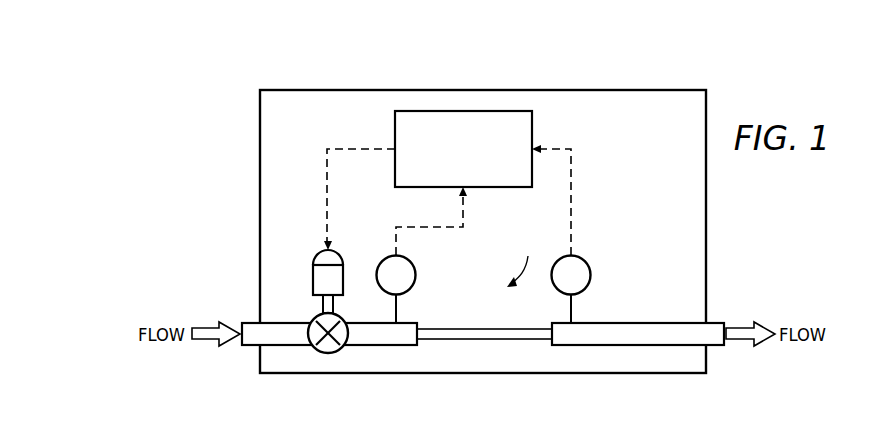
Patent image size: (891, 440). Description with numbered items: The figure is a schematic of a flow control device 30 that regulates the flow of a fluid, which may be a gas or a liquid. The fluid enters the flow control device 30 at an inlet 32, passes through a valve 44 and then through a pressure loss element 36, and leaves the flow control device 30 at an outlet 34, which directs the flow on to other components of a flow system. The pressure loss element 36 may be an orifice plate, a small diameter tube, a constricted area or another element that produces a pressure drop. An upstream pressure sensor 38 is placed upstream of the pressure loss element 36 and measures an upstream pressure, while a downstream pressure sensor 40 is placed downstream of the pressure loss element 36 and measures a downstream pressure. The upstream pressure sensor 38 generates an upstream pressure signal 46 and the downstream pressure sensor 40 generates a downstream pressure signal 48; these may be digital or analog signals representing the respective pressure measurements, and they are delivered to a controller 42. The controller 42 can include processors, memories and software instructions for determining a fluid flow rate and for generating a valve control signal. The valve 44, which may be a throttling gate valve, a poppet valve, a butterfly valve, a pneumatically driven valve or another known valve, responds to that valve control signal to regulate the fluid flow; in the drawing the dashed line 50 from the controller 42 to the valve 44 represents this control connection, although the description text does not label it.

The flow control device 30 is at (627, 141).
The inlet 32 is at (250, 322).
The outlet 34 is at (716, 322).
The pressure loss element 36 is at (483, 328).
The upstream pressure sensor 38 is at (416, 273).
The downstream pressure sensor 40 is at (590, 278).
The controller 42 is at (451, 161).
The valve 44 is at (312, 316).
The upstream pressure signal 46 is at (524, 260).
The downstream pressure signal 48 is at (572, 212).
The valve control signal line 50 is at (352, 147).